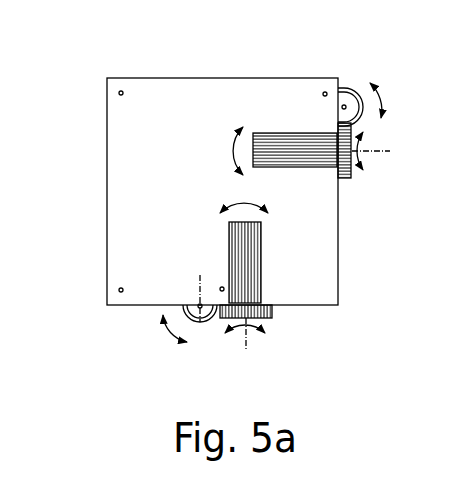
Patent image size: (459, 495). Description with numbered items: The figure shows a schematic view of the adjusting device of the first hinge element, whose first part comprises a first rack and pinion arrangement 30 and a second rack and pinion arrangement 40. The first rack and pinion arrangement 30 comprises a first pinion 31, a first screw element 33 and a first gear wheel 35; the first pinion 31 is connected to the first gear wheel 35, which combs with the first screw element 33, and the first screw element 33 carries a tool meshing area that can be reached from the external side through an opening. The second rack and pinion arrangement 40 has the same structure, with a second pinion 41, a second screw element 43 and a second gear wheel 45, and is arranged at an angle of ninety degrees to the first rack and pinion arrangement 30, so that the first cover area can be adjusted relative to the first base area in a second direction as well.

The first rack and pinion arrangement 30 is at (146, 254).
The first pinion 31 is at (229, 247).
The first screw element 33 is at (196, 328).
The first gear wheel 35 is at (267, 325).
The second rack and pinion arrangement 40 is at (217, 108).
The second pinion 41 is at (277, 137).
The second screw element 43 is at (345, 88).
The second gear wheel 45 is at (352, 176).